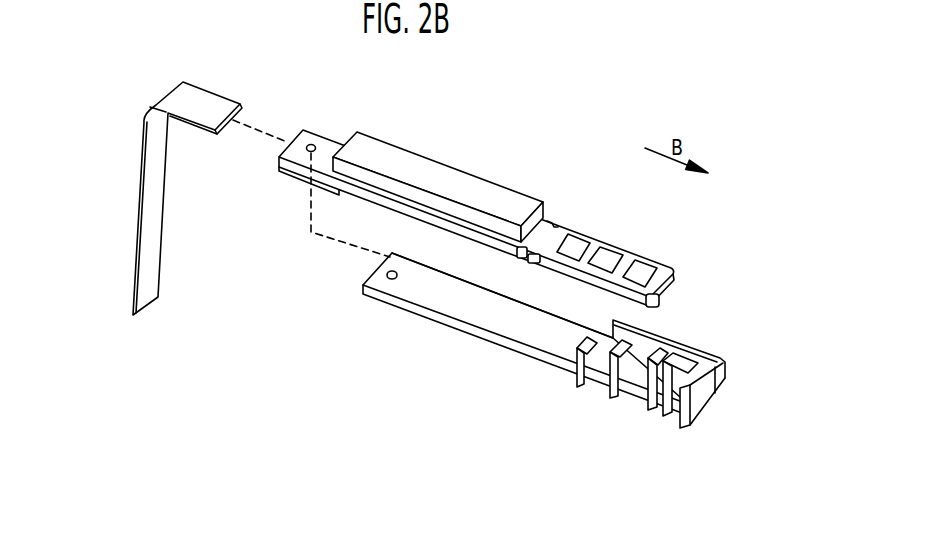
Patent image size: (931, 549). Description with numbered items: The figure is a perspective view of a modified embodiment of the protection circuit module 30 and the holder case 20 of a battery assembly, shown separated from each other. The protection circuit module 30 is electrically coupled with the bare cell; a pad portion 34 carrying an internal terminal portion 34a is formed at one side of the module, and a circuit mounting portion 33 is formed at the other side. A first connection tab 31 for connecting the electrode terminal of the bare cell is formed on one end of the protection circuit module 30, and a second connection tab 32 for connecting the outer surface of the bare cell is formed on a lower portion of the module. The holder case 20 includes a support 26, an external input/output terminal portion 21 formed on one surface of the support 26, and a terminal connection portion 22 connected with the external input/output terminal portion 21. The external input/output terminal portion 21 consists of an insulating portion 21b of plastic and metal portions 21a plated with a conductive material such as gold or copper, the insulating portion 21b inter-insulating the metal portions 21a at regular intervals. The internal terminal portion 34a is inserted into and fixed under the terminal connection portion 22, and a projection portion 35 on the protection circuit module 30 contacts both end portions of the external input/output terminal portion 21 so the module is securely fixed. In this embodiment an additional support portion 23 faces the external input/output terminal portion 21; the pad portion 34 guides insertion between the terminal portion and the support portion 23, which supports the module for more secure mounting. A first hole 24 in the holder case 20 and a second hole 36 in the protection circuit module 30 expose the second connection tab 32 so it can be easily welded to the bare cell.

The holder case 20 is at (416, 326).
The external input/output terminal portion 21 is at (637, 425).
The metal portion 21a is at (678, 412).
The insulating portion 21b is at (648, 410).
The terminal connection portion 22 is at (725, 359).
The support portion 23 is at (726, 377).
The first hole 24 is at (390, 279).
The support 26 is at (472, 313).
The protection circuit module 30 is at (341, 128).
The first connection tab 31 is at (152, 236).
The second connection tab 32 is at (303, 180).
The circuit mounting portion 33 is at (402, 157).
The pad portion 34 is at (596, 247).
The internal terminal portion 34a is at (577, 243).
The projection portion 35 is at (553, 224).
The second hole 36 is at (313, 145).